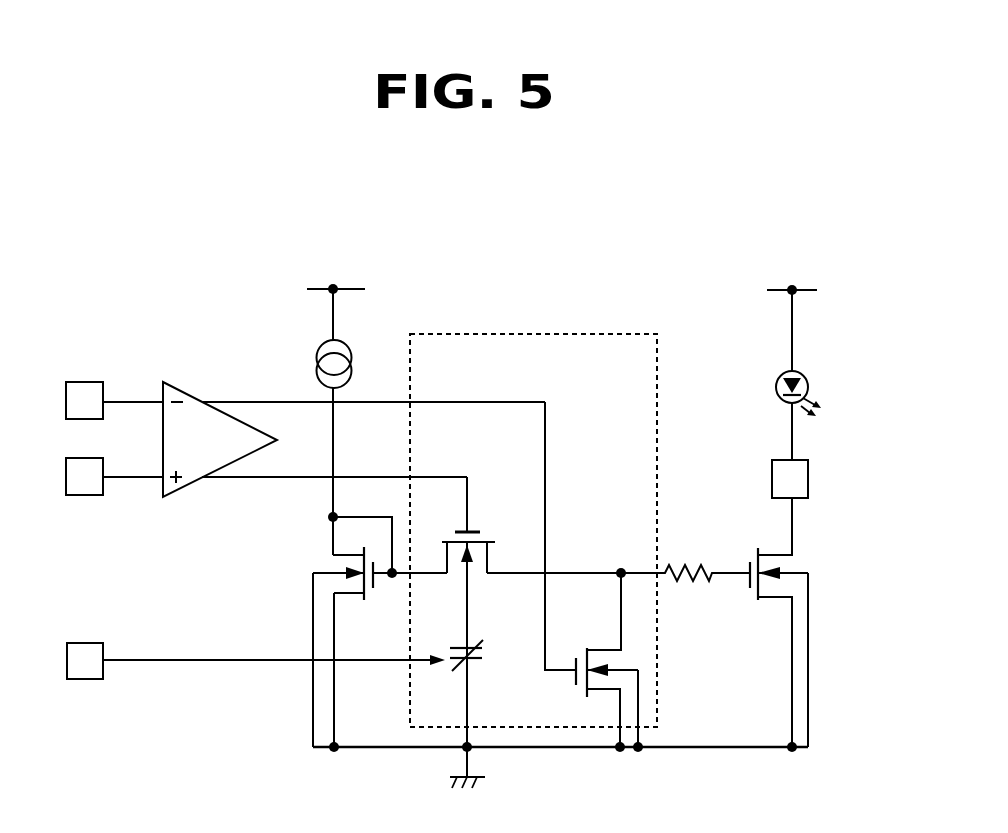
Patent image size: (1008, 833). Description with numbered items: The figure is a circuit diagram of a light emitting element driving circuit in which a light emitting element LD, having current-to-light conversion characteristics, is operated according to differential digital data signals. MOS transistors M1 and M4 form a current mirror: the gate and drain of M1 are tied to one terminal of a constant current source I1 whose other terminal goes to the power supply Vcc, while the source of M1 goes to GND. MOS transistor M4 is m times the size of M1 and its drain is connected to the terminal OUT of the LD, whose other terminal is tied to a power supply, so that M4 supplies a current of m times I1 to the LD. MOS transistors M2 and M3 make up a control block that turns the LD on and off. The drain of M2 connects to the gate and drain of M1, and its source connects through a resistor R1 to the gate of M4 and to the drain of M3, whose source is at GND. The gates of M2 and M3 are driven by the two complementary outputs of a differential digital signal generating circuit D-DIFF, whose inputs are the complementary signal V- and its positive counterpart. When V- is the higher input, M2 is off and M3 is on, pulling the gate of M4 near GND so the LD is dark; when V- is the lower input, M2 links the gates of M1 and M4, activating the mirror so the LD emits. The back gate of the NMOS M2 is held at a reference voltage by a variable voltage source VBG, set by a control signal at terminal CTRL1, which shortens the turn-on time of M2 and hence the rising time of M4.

The power supply Vcc is at (562, 274).
The constant current source I1 is at (348, 422).
The differential digital signal generating circuit D-DIFF is at (369, 510).
The complementary digital signal input V- is at (114, 382).
The MOS transistor M1 is at (367, 629).
The MOS transistor M2 is at (531, 625).
The MOS transistor M3 is at (605, 657).
The MOS transistor M4 is at (796, 622).
The resistor R1 is at (685, 556).
The variable voltage source VBG is at (450, 646).
The terminal CTRL1 is at (249, 683).
The light emitting element LD is at (807, 375).
The terminal OUT is at (819, 479).
The ground potential GND is at (560, 766).